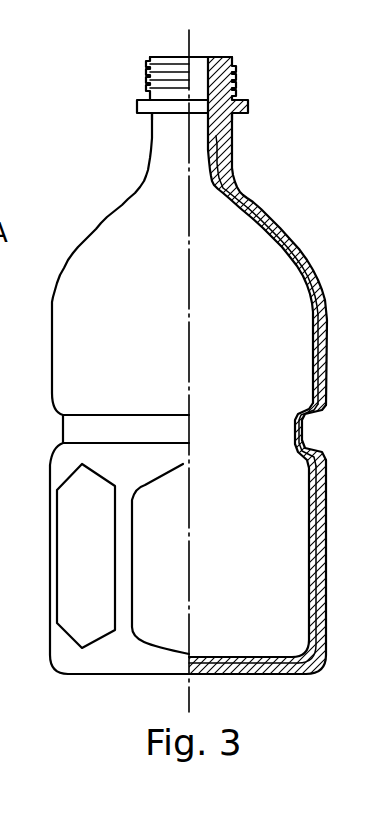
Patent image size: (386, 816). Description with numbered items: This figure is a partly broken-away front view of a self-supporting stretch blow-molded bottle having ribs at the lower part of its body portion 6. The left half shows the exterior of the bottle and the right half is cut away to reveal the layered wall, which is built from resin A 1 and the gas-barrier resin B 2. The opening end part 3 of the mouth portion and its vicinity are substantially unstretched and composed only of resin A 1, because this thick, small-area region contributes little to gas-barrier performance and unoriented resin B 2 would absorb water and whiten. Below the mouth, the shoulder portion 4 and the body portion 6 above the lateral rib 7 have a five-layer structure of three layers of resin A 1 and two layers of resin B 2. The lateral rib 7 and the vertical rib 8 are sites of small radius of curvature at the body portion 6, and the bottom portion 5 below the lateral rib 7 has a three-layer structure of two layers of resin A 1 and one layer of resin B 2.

The resin A 1 is at (242, 202).
The resin B 2 is at (323, 543).
The opening end part 3 is at (232, 63).
The shoulder portion 4 is at (285, 233).
The bottom portion 5 is at (250, 675).
The body portion 6 is at (327, 493).
The lateral rib 7 is at (67, 432).
The vertical rib 8 is at (62, 583).